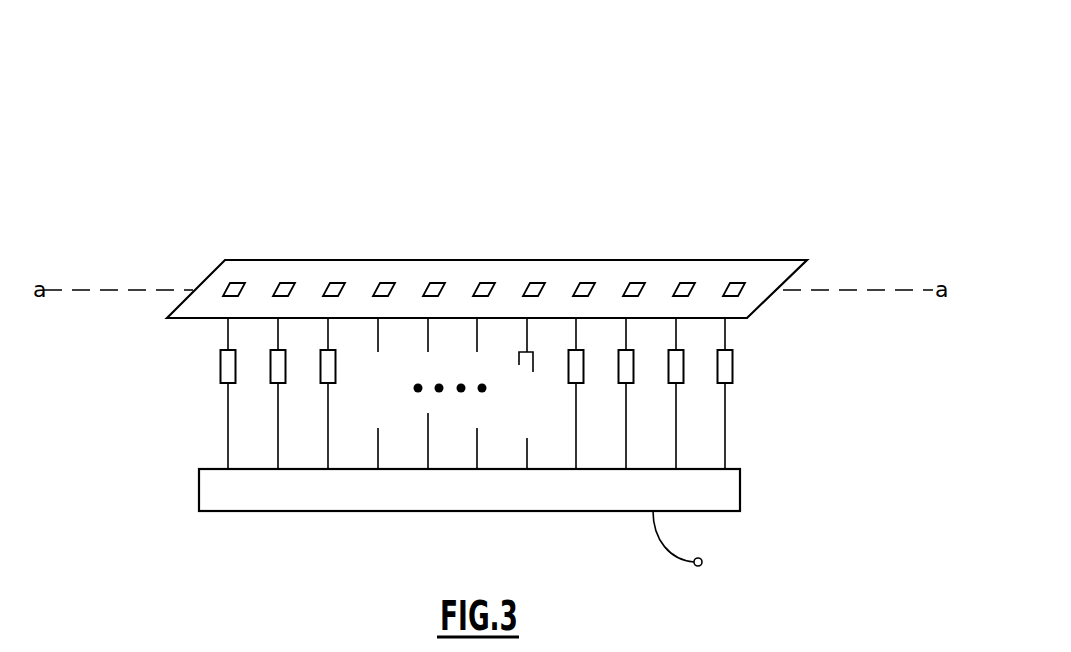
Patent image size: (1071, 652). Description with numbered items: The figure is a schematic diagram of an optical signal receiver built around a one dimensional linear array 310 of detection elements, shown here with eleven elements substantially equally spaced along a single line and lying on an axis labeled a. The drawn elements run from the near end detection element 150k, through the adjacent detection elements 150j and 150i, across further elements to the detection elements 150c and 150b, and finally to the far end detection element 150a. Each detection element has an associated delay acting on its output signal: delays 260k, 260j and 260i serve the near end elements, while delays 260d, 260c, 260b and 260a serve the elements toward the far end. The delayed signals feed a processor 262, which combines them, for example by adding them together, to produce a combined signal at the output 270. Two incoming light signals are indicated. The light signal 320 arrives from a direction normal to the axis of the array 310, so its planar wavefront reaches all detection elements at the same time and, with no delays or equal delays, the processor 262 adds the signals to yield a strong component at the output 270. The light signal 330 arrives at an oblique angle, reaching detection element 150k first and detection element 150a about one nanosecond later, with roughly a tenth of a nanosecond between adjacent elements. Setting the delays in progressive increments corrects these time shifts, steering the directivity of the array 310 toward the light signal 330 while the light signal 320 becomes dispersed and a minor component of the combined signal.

The linear array 310 is at (790, 260).
The light signal 320 is at (490, 80).
The light signal 330 is at (221, 102).
The detection element 150a is at (739, 262).
The detection element 150b is at (678, 262).
The detection element 150c is at (631, 262).
The detection element 150i is at (341, 262).
The detection element 150j is at (284, 262).
The detection element 150k is at (235, 262).
The delay 260a is at (746, 393).
The delay 260b is at (696, 393).
The delay 260c is at (646, 393).
The delay 260d is at (596, 393).
The delay 260i is at (346, 393).
The delay 260j is at (296, 393).
The delay 260k is at (248, 393).
The processor 262 is at (740, 483).
The output 270 is at (702, 562).